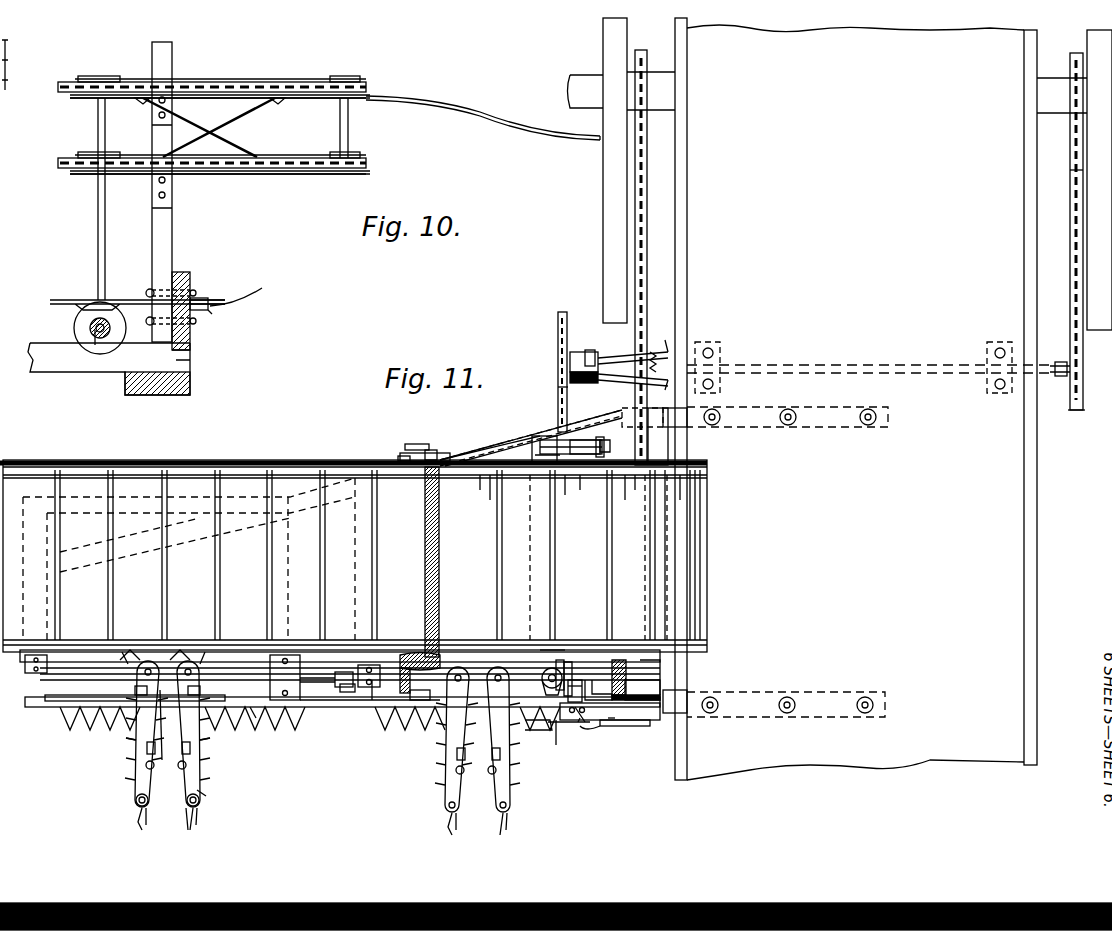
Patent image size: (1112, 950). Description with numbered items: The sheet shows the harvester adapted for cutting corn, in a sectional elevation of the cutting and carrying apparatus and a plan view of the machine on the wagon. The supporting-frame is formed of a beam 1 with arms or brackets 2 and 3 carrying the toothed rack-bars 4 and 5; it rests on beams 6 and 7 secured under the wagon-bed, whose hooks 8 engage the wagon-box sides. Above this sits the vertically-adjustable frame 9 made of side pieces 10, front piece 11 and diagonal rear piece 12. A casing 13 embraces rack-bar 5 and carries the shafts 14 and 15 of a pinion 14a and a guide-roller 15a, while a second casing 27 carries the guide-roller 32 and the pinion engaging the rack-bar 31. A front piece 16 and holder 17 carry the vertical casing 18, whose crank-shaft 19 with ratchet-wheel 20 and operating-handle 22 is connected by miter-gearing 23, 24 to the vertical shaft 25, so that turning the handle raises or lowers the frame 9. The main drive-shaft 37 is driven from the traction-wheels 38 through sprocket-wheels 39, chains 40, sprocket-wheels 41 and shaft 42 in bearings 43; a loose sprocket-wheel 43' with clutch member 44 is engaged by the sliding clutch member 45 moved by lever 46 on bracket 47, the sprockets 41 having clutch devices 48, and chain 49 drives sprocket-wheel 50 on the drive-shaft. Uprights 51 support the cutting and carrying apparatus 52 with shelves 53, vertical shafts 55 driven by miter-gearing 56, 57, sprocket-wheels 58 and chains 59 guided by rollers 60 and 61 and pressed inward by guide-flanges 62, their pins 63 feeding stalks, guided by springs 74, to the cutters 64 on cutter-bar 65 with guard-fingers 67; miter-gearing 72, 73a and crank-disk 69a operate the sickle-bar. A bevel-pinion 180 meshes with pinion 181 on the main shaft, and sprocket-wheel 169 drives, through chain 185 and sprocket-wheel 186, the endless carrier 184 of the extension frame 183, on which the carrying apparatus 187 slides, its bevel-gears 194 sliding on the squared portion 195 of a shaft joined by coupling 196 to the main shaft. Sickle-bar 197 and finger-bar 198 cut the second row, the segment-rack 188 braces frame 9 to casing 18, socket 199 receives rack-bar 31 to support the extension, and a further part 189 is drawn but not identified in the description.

In FIG. 11, the frame post 1 is at (690, 452).
In FIG. 11, the frame rail 2 is at (634, 690).
In FIG. 11, the inclined bar 3 is at (614, 420).
In FIG. 11, the lever 4 is at (566, 720).
In FIG. 11, the gear block 5 is at (580, 455).
In FIG. 11, the lower guide bar 6 is at (780, 692).
In FIG. 11, the upper guide bar 7 is at (788, 428).
In FIG. 11, the bracket 8 is at (688, 422).
In FIG. 11, the plate 9 is at (455, 455).
In FIG. 11, the conveyor frame 10 is at (378, 566).
In FIG. 10, the base 11 is at (192, 385).
In FIG. 11, the base 11 is at (412, 700).
In FIG. 11, the inclined rod 12 is at (486, 450).
In FIG. 11, the block 13 is at (578, 438).
In FIG. 11, the bearing 14 is at (545, 470).
In FIG. 11, the bearing block 14a is at (538, 436).
In FIG. 11, the collar 15 is at (596, 456).
In FIG. 11, the collar 15a is at (608, 446).
In FIG. 10, the standard 16 is at (190, 276).
In FIG. 11, the standard 16 is at (612, 722).
In FIG. 11, the link 17 is at (578, 722).
In FIG. 11, the lever arm 18 is at (586, 722).
In FIG. 11, the bracket 19 is at (582, 690).
In FIG. 11, the bracket 20 is at (600, 690).
In FIG. 11, the bar 22 is at (610, 706).
In FIG. 11, the arm 23 is at (566, 665).
In FIG. 11, the roller 24 is at (548, 672).
In FIG. 11, the bar 25 is at (550, 655).
In FIG. 11, the rod 27 is at (372, 690).
In FIG. 11, the rod 31 is at (256, 718).
In FIG. 11, the worm 32 is at (386, 688).
In FIG. 10, the wheel 37 is at (92, 323).
In FIG. 11, the wheel 37 is at (337, 668).
In FIG. 11, the post 38 is at (1024, 250).
In FIG. 11, the slotted rail 39 is at (1076, 56).
In FIG. 11, the slot 40 is at (1070, 188).
In FIG. 11, the rail end 41 is at (1074, 412).
In FIG. 11, the cross rod 42 is at (855, 364).
In FIG. 11, the plate 43 is at (853, 366).
In FIG. 11, the slotted rail 43' is at (546, 371).
In FIG. 11, the slotted rail 44 is at (566, 336).
In FIG. 11, the block 45 is at (588, 350).
In FIG. 11, the rod 46 is at (606, 362).
In FIG. 11, the spring 47 is at (648, 350).
In FIG. 11, the bolt 48 is at (692, 352).
In FIG. 11, the block 49 is at (560, 388).
In FIG. 11, the arm 50 is at (560, 666).
In FIG. 10, the post 51 is at (164, 44).
In FIG. 11, the post 51 is at (135, 690).
In FIG. 11, the chain 52 is at (465, 751).
In FIG. 10, the bar 53 is at (78, 98).
In FIG. 10, the bar 55 is at (104, 126).
In FIG. 10, the plate 56 is at (84, 298).
In FIG. 10, the axle 57 is at (90, 340).
In FIG. 10, the bracket 58 is at (96, 76).
In FIG. 11, the bracket 58 is at (186, 658).
In FIG. 10, the chain slat 59 is at (238, 78).
In FIG. 11, the chain slat 59 is at (133, 763).
In FIG. 10, the sprocket 60 is at (344, 76).
In FIG. 11, the sprocket 60 is at (136, 800).
In FIG. 11, the sprocket 61 is at (200, 804).
In FIG. 11, the chain 62 is at (151, 725).
In FIG. 10, the brace 63 is at (302, 92).
In FIG. 10, the bracket 64 is at (204, 298).
In FIG. 11, the bracket 64 is at (422, 700).
In FIG. 10, the pin 65 is at (208, 312).
In FIG. 10, the spring arm 67 is at (264, 290).
In FIG. 11, the bar 69a is at (636, 722).
In FIG. 11, the rod 72 is at (662, 690).
In FIG. 11, the ratchet 73a is at (624, 660).
In FIG. 10, the cable 74 is at (470, 112).
In FIG. 11, the cable 74 is at (186, 824).
In FIG. 11, the stop 169 is at (405, 455).
In FIG. 11, the shaft 180 is at (440, 652).
In FIG. 11, the gear 181 is at (416, 656).
In FIG. 11, the top plate 183 is at (276, 462).
In FIG. 11, the hopper 184 is at (170, 585).
In FIG. 11, the plate 185 is at (417, 442).
In FIG. 11, the block 186 is at (436, 430).
In FIG. 11, the pin 187 is at (206, 798).
In FIG. 11, the link 188 is at (538, 751).
In FIG. 11, the pin 189 is at (556, 741).
In FIG. 11, the bracket 194 is at (126, 656).
In FIG. 11, the bar 195 is at (135, 675).
In FIG. 11, the rod 196 is at (348, 684).
In FIG. 11, the pin 197 is at (97, 745).
In FIG. 11, the pin 198 is at (151, 745).
In FIG. 11, the bracket 199 is at (263, 676).